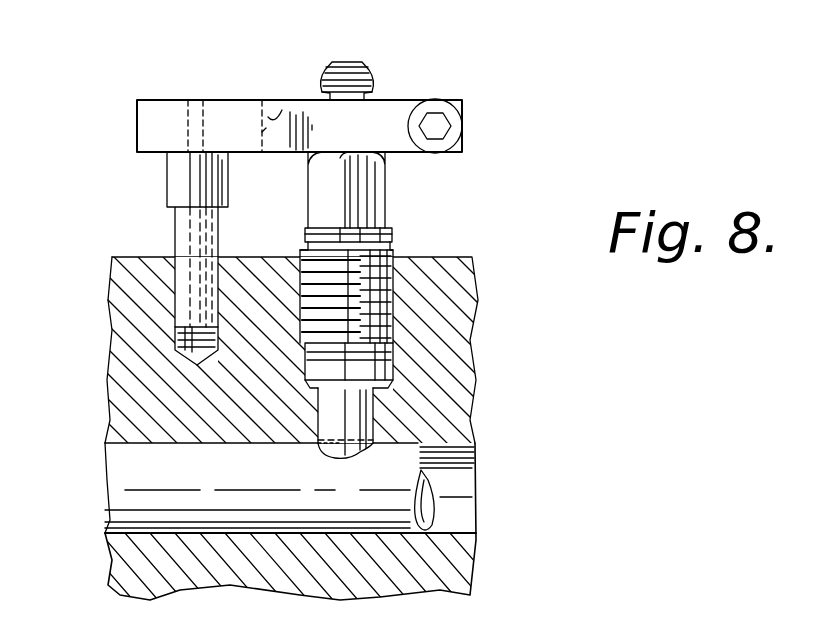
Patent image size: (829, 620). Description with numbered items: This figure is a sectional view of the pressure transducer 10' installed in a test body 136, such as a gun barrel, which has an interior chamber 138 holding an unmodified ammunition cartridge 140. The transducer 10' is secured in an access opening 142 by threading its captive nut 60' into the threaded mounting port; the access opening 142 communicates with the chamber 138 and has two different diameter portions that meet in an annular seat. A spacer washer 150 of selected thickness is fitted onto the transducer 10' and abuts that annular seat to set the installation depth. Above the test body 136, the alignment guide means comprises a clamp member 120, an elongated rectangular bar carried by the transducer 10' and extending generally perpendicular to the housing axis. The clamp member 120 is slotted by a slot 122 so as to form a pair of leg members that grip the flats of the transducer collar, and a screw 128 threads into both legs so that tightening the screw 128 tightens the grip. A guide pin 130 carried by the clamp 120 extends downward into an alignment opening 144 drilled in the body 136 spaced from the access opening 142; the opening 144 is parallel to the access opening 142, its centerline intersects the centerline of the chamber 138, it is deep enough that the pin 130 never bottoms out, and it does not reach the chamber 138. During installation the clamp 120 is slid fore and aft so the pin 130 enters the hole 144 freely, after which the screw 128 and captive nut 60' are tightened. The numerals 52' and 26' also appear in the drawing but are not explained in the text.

The clamp member 120 is at (160, 100).
The slot 122 is at (285, 110).
The knob 52' is at (367, 61).
The screw 128 is at (462, 125).
The captive nut 60' is at (390, 201).
The transducer 10' is at (425, 274).
The test body 136 is at (472, 272).
The access opening 142 is at (390, 363).
The spacer washer 150 is at (388, 398).
The ammunition cartridge 140 is at (135, 467).
The interior chamber 138 is at (450, 525).
The alignment opening 144 is at (205, 338).
The pin 130 is at (175, 228).
The passage 26' is at (303, 465).